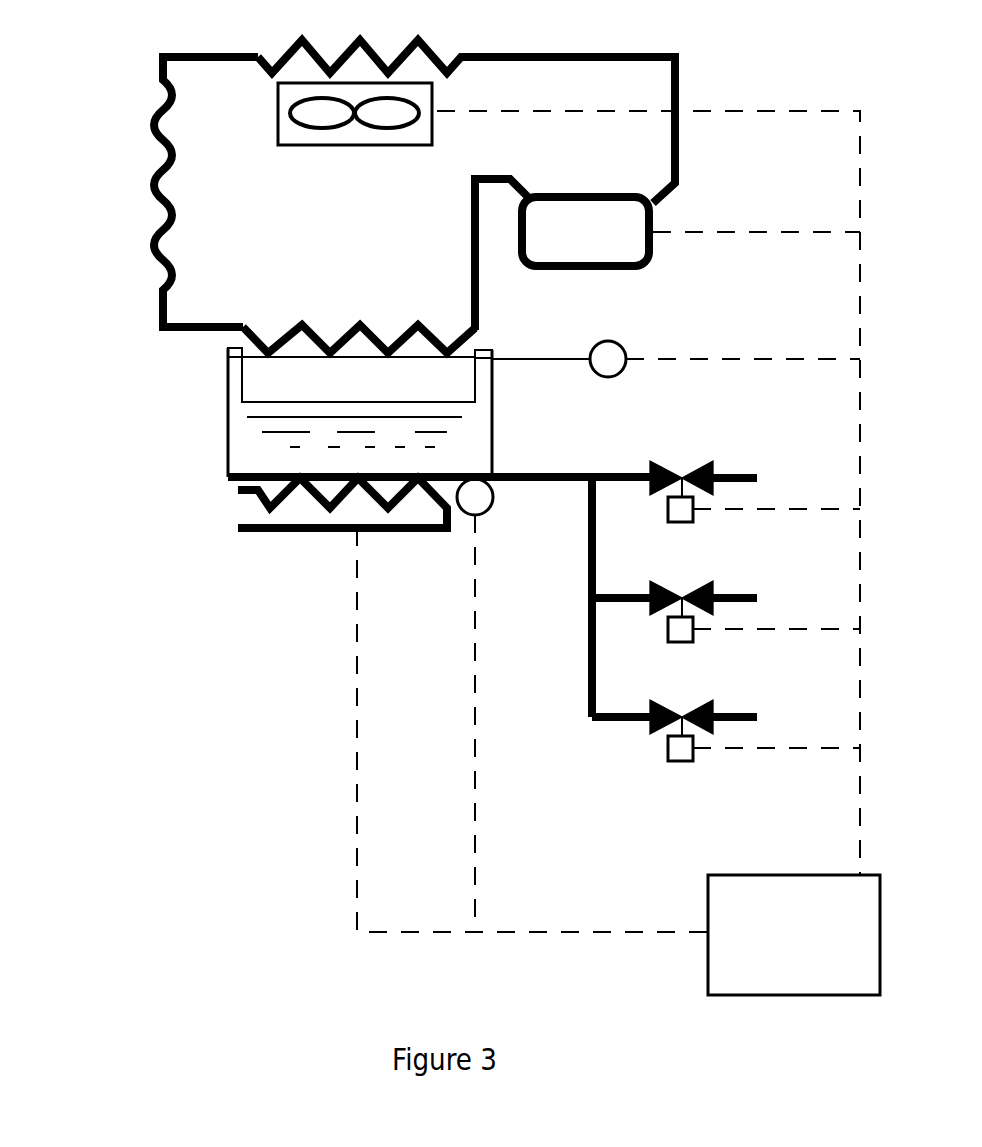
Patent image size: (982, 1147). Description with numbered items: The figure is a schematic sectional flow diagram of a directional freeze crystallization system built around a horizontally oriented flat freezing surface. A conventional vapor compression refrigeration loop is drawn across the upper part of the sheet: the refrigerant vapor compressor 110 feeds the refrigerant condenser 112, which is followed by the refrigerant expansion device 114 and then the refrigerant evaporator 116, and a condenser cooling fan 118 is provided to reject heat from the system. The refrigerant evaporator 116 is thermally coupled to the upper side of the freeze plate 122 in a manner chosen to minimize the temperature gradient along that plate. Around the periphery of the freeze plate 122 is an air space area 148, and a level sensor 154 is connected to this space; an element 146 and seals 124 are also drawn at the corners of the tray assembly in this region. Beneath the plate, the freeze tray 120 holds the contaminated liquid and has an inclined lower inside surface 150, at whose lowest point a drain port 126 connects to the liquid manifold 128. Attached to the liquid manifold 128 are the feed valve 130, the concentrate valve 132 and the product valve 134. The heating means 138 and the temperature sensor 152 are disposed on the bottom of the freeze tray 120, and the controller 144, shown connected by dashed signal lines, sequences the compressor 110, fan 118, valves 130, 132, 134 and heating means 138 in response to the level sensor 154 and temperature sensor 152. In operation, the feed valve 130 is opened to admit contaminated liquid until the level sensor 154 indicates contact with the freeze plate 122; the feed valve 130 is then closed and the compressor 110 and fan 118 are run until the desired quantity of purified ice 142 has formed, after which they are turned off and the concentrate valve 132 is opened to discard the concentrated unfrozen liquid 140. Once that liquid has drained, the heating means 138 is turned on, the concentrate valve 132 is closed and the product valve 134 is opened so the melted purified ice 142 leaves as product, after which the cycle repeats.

The refrigerant vapor compressor 110 is at (655, 255).
The refrigerant condenser 112 is at (432, 50).
The refrigerant expansion device 114 is at (153, 118).
The refrigerant evaporator 116 is at (307, 330).
The condenser cooling fan 118 is at (433, 112).
The freeze tray 120 is at (228, 458).
The freeze plate 122 is at (287, 358).
The seal 124 is at (228, 350).
The drain port 126 is at (492, 473).
The liquid manifold 128 is at (587, 477).
The feed valve 130 is at (712, 703).
The concentrate valve 132 is at (703, 592).
The product valve 134 is at (712, 463).
The heating means 138 is at (258, 498).
The concentrated unfrozen liquid 140 is at (293, 448).
The purified ice 142 is at (298, 385).
The controller 144 is at (778, 993).
The inlet line 146 is at (466, 355).
The air space area 148 is at (480, 350).
The lower inside surface 150 is at (437, 477).
The temperature sensor 152 is at (480, 508).
The level sensor 154 is at (626, 343).